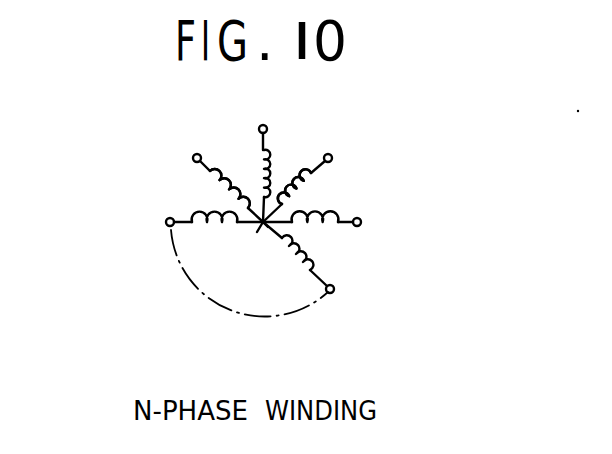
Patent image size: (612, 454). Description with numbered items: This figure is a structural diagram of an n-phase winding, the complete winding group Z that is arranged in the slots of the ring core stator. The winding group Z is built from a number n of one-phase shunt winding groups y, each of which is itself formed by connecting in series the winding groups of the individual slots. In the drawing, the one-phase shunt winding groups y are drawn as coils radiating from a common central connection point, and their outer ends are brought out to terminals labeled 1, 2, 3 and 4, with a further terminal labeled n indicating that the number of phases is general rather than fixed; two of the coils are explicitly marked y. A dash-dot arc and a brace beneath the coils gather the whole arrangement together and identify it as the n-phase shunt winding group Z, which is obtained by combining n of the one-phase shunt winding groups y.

The phase 1 terminal and winding 1 is at (182, 157).
The phase 2 terminal and winding 2 is at (262, 155).
The phase 3 terminal and winding 3 is at (308, 175).
The phase 4 terminal and winding 4 is at (324, 221).
The number of phases n is at (204, 223).
The one-phase shunt winding group y is at (231, 187).
The n-phase shunt winding group Z is at (365, 337).